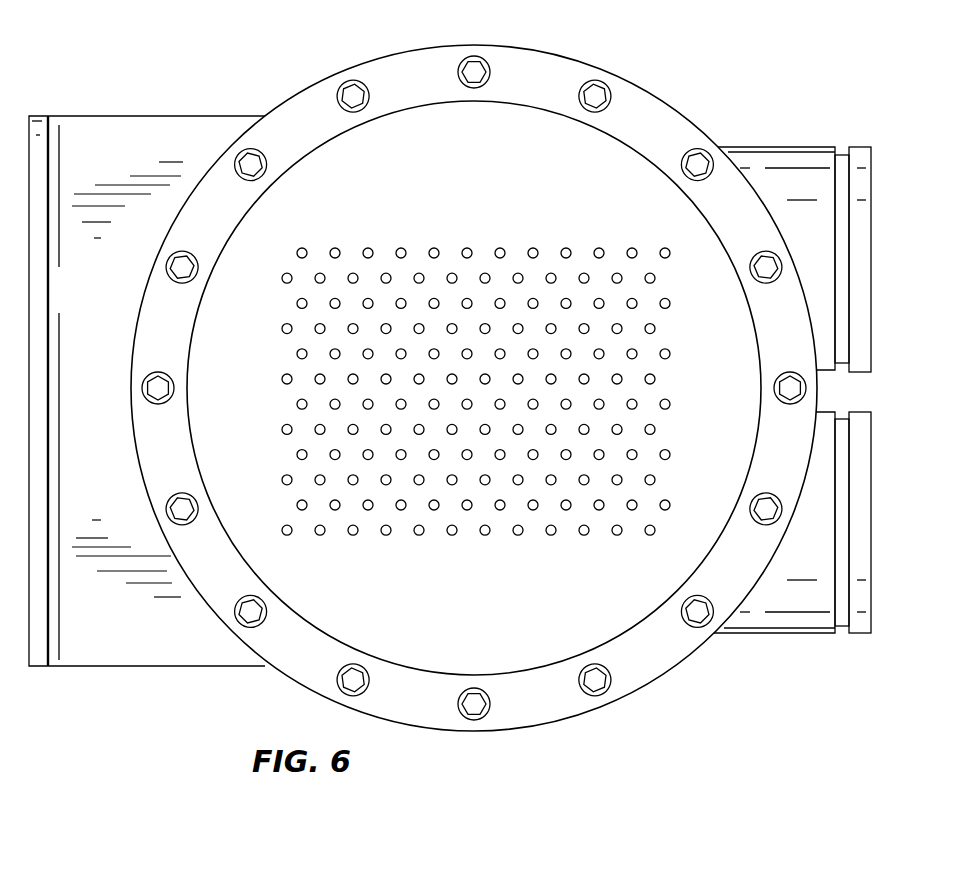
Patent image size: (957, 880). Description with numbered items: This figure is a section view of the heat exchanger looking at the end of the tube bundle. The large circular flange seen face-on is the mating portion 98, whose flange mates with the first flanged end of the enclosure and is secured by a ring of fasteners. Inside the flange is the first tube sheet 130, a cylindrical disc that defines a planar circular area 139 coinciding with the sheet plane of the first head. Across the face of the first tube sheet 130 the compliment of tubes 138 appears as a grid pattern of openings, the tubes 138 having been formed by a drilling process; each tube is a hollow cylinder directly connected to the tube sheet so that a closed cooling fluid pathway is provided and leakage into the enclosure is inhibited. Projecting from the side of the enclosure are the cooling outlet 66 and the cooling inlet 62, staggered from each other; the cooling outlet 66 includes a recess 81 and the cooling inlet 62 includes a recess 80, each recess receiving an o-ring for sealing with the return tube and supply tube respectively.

The mating portion 98 is at (643, 118).
The recess 81 is at (843, 147).
The cooling outlet 66 is at (872, 217).
The cooling inlet 62 is at (872, 512).
The recess 80 is at (843, 634).
The first tube sheet 130 is at (476, 342).
The tubes 138 is at (487, 279).
The planar circular area 139 is at (493, 175).